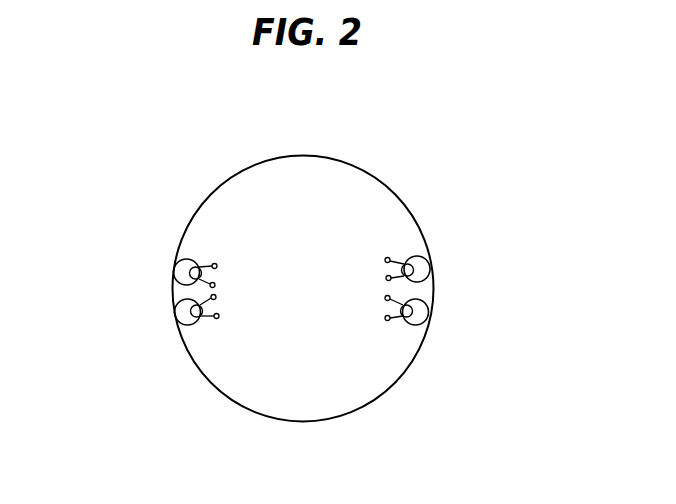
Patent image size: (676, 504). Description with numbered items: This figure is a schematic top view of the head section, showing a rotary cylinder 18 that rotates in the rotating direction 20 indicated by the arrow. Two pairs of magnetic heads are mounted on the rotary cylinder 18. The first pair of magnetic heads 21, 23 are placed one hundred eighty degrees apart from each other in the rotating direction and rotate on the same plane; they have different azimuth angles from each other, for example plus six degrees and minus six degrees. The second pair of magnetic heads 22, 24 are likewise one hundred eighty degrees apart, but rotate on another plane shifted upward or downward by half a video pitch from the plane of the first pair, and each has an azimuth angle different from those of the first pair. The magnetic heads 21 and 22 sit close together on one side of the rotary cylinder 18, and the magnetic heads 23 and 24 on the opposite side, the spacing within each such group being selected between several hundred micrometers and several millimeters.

The rotary cylinder 18 is at (316, 422).
The rotating direction 20 is at (318, 121).
The magnetic head 21 is at (430, 317).
The magnetic head 22 is at (430, 263).
The magnetic head 23 is at (174, 264).
The magnetic head 24 is at (175, 308).